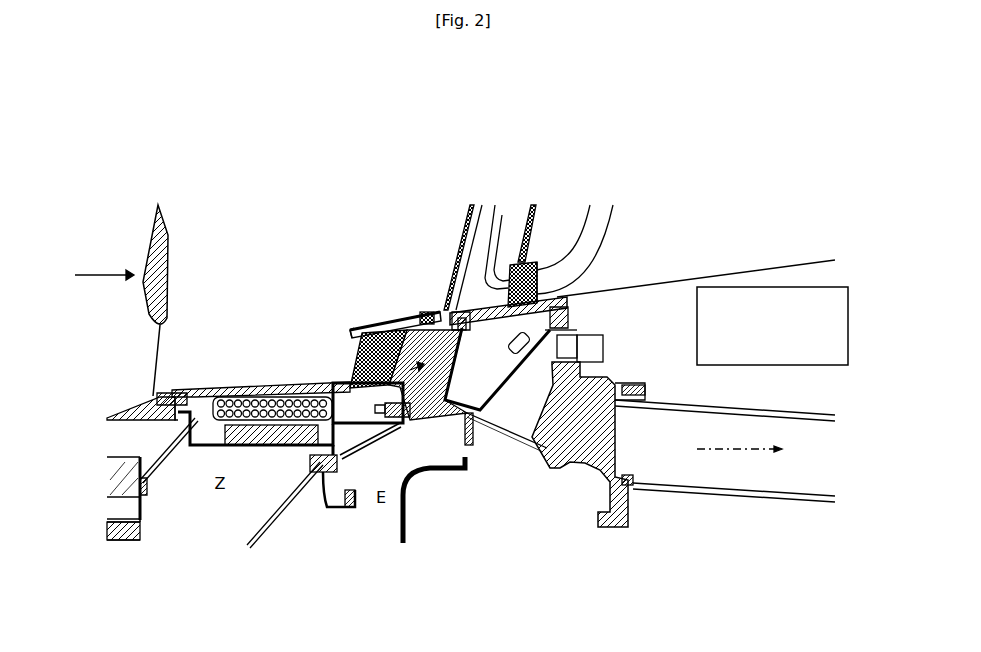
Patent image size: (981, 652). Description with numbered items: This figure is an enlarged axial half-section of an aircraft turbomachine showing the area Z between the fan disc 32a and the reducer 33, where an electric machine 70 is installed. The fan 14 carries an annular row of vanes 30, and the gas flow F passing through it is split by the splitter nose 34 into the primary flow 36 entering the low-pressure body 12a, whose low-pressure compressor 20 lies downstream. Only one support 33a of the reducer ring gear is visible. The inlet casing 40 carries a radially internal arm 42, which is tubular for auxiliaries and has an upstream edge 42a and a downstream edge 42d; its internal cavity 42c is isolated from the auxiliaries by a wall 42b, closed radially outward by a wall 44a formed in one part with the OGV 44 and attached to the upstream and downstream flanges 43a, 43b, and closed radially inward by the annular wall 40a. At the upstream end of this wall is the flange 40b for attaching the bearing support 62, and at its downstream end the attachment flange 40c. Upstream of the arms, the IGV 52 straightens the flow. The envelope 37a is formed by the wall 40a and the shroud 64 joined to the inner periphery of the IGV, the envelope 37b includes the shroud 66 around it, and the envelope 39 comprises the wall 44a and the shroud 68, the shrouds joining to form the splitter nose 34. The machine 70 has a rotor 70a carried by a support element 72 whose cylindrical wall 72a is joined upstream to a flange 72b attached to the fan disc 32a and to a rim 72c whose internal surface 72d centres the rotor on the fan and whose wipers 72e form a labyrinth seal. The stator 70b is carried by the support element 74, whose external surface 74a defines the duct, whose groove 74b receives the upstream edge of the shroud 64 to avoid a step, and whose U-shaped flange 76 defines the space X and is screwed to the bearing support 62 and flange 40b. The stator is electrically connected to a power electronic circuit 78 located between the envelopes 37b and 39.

The low-pressure body 12a is at (734, 523).
The low-pressure compressor 20 is at (708, 500).
The fan 14 is at (108, 300).
The fan vanes 30 is at (137, 355).
The fan disc 32a is at (115, 543).
The reducer 33 is at (431, 534).
The ring gear support 33a is at (413, 532).
The splitter nose 34 is at (352, 327).
The primary flow 36 is at (345, 332).
The envelope 37a is at (603, 528).
The envelope 37b is at (640, 388).
The envelope 39 is at (706, 276).
The inlet casing 40 is at (465, 438).
The annular wall 40a is at (447, 420).
The radially internal annular flange 40b is at (383, 432).
The radially internal annular attachment flange 40c is at (477, 412).
The radially internal arms 42 is at (552, 346).
The upstream edge 42a is at (440, 310).
The wall 42b is at (537, 350).
The internal cavity 42c is at (507, 260).
The downstream edge 42d is at (630, 440).
The upstream annular flange 43a is at (450, 300).
The downstream annular flange 43b is at (575, 318).
The guide vanes (OGV) 44 is at (607, 217).
The wall 44a is at (530, 260).
The guide vanes (IGV) 52 is at (387, 328).
The bearing support 62 is at (298, 520).
The annular shroud 64 is at (348, 367).
The annular shroud 66 is at (347, 358).
The annular shroud 68 is at (405, 311).
The electric machine 70 is at (272, 389).
The rotor 70a is at (280, 445).
The stator 70b is at (260, 395).
The support element 72 is at (204, 435).
The cylindrical wall 72a is at (257, 452).
The radially internal annular flange 72b is at (147, 503).
The external annular rim 72c is at (178, 445).
The internal cylindrical surface 72d is at (180, 417).
The external annular wipers 72e is at (183, 390).
The annular support element 74 is at (245, 414).
The external annular surface 74a is at (213, 388).
The annular groove 74b is at (298, 505).
The annular flange 76 is at (358, 462).
The power electronic circuit 78 is at (850, 325).